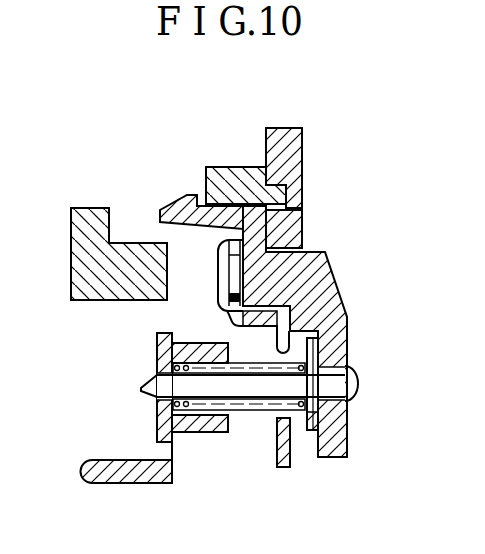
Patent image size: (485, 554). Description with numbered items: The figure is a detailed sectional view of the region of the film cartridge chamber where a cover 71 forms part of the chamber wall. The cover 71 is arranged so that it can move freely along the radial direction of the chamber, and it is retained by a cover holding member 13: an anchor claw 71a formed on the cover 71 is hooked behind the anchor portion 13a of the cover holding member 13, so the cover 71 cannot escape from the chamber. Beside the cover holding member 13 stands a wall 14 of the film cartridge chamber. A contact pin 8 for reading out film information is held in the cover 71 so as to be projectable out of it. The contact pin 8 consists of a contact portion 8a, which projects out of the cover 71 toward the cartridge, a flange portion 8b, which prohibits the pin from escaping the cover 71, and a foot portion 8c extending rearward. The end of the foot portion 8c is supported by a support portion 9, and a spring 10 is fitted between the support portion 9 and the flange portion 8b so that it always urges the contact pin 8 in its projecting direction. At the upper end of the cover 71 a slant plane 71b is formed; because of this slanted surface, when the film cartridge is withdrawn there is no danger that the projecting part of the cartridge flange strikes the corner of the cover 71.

The contact pin 8 is at (271, 399).
The contact portion 8a is at (353, 398).
The flange portion 8b is at (313, 352).
The foot portion 8c is at (263, 386).
The support portion 9 is at (157, 420).
The spring 10 is at (192, 433).
The cover holding member 13 is at (290, 231).
The anchor portion 13a is at (228, 166).
The wall of the film cartridge chamber 14 is at (302, 156).
The cover 71 is at (345, 441).
The anchor claw 71a is at (190, 194).
The slant plane 71b is at (336, 286).